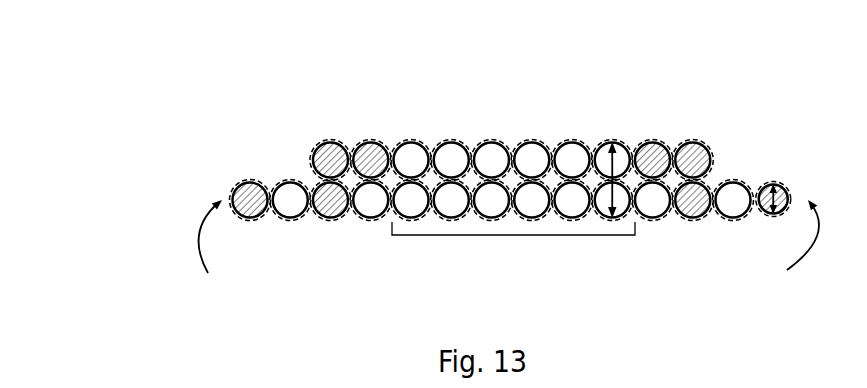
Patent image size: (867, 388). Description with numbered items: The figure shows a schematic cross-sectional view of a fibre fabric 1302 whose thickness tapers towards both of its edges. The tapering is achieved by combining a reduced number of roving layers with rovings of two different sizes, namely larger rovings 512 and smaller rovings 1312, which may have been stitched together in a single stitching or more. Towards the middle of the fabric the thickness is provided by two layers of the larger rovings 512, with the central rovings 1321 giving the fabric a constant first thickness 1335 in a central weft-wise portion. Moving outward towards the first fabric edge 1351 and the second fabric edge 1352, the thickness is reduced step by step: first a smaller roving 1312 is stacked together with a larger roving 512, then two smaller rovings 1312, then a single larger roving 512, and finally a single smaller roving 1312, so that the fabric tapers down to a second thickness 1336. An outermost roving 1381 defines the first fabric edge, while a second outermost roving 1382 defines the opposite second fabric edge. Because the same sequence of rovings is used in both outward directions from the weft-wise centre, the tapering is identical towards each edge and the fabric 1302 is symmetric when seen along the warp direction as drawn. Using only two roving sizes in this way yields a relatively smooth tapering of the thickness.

The fabric 1302 is at (90, 43).
The roving 512 is at (662, 213).
The roving 1312 is at (367, 164).
The non-magnetic spheres 1321 is at (573, 141).
The first thickness 1335 is at (617, 143).
The second thickness 1336 is at (756, 212).
The first fabric edge 1351 is at (791, 255).
The second fabric edge 1352 is at (197, 255).
The outermost roving 1381 is at (777, 183).
The second outermost roving 1382 is at (242, 186).